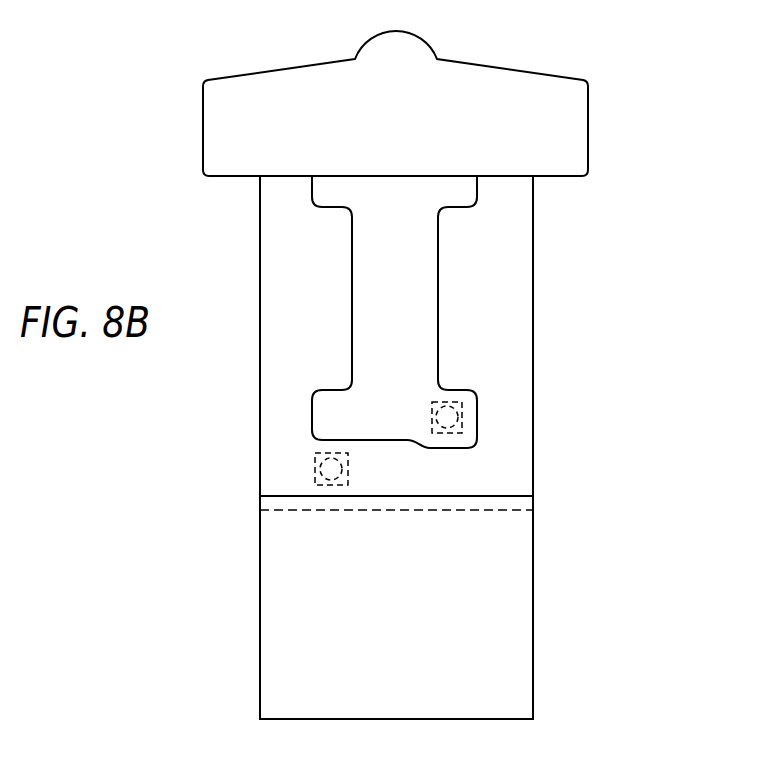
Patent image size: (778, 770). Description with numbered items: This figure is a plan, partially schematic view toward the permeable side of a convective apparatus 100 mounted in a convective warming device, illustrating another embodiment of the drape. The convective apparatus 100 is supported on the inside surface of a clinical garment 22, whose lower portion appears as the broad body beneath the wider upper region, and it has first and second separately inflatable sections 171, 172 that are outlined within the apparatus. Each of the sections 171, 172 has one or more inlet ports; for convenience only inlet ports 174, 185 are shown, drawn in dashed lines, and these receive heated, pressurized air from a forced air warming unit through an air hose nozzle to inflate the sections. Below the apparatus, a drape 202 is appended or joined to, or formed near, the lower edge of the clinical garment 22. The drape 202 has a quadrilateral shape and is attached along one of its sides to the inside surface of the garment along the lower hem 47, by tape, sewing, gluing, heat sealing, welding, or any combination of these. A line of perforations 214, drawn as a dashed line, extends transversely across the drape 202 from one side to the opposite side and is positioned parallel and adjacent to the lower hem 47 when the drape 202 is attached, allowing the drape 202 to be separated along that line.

The clinical garment 22 is at (573, 77).
The first separately inflatable section 171 is at (473, 200).
The convective apparatus 100 is at (510, 286).
The second separately inflatable section 172 is at (492, 335).
The inlet port 174 is at (443, 402).
The inlet port 185 is at (315, 470).
The lower hem 47 is at (482, 497).
The line of perforations 214 is at (293, 512).
The drape 202 is at (533, 595).